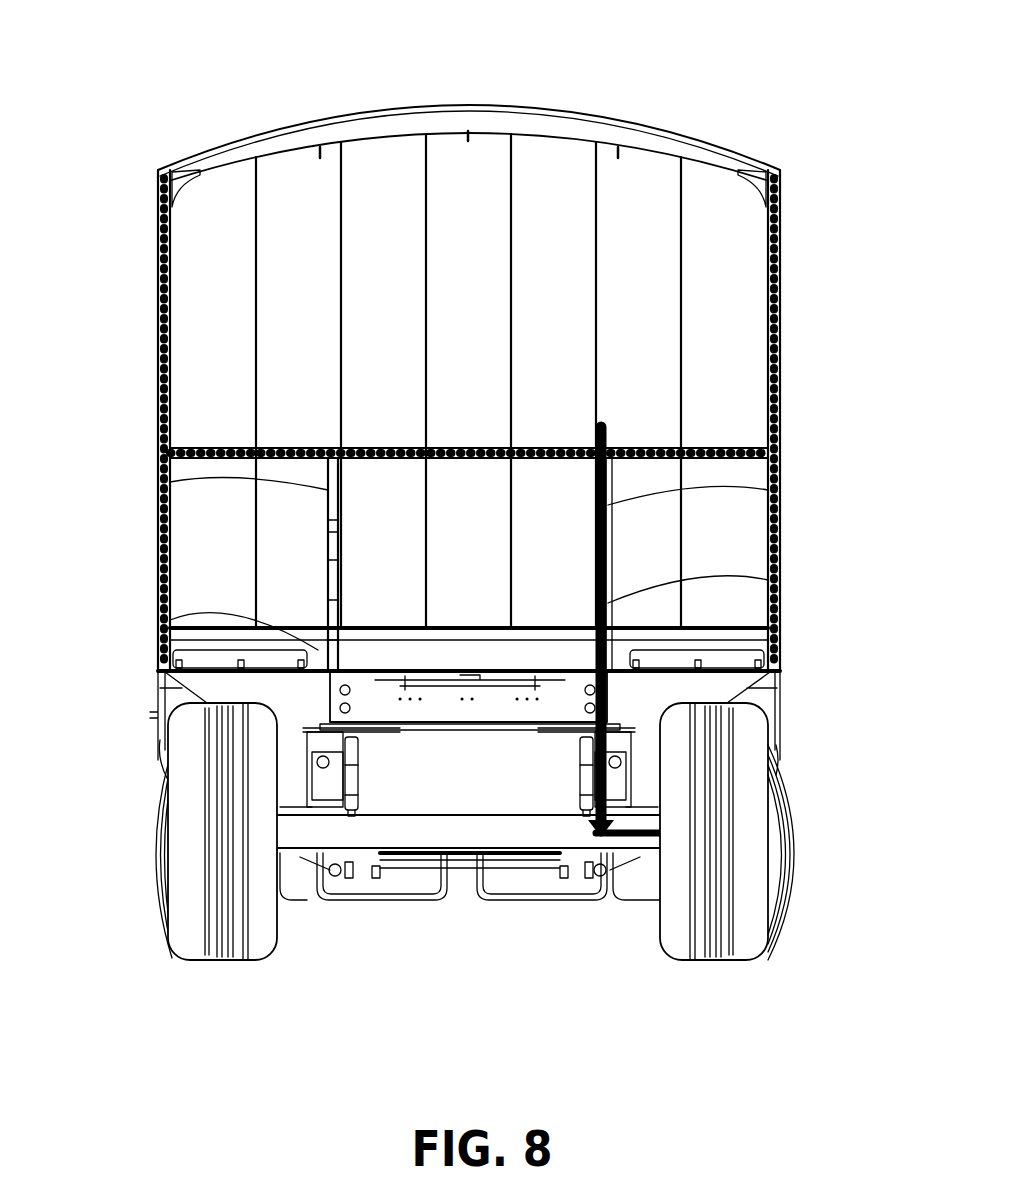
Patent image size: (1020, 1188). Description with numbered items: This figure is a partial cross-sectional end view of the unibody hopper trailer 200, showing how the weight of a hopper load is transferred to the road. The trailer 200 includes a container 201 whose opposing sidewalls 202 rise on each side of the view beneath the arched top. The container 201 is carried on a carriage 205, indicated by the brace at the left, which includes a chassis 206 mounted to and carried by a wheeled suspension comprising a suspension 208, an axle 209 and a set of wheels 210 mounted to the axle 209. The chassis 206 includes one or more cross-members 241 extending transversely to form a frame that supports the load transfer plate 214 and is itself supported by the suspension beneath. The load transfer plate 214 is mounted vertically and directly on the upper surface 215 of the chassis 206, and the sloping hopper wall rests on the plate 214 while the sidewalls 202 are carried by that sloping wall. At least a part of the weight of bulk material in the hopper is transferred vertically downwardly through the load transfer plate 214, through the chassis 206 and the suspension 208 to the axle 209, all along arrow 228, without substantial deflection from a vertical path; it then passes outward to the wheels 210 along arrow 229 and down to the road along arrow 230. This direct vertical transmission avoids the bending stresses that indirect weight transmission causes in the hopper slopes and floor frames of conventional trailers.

The unibody hopper trailer 200 is at (190, 70).
The container 201 is at (160, 172).
The sidewall 202 is at (158, 254).
The carriage 205 is at (128, 715).
The chassis 206 is at (372, 698).
The suspension 208 is at (362, 787).
The axle 209 is at (475, 840).
The wheel 210 is at (215, 935).
The load transfer plate 214 is at (170, 482).
The upper surface 215 is at (318, 650).
The arrow 228 is at (768, 580).
The arrow 229 is at (665, 830).
The arrow 230 is at (718, 877).
The cross-member 241 is at (497, 703).